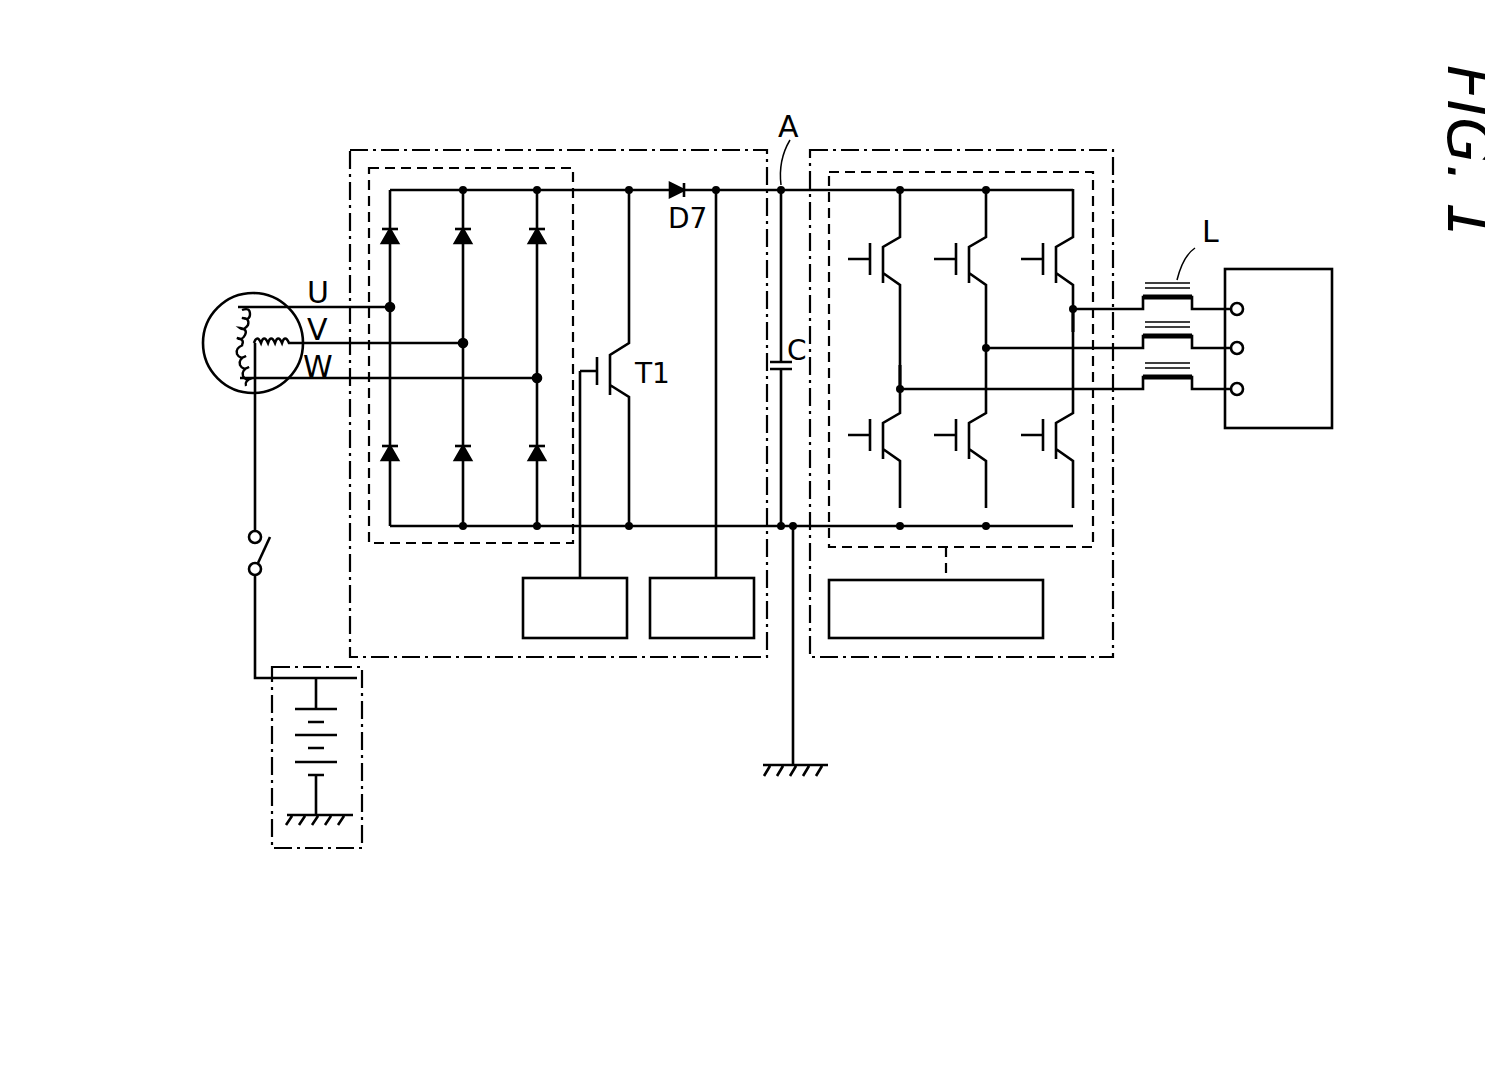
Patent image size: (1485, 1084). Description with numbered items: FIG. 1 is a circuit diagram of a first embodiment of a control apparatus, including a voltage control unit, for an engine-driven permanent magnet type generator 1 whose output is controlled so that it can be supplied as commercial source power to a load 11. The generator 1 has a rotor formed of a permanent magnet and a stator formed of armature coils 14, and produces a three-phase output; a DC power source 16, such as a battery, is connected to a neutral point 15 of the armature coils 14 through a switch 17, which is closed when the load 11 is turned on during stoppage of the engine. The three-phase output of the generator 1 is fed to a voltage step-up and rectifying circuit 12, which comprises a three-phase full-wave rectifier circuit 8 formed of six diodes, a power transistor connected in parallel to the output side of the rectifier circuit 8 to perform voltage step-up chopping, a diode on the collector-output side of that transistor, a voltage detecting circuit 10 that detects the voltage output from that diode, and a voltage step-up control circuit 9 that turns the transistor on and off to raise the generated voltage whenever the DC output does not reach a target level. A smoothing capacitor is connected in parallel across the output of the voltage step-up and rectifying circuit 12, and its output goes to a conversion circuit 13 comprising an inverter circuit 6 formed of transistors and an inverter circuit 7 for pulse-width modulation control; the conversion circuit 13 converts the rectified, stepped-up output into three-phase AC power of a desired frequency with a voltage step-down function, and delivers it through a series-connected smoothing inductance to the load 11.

The permanent magnet type generator 1 is at (228, 319).
The armature coils 14 is at (238, 320).
The neutral point 15 is at (243, 343).
The switch 17 is at (248, 562).
The DC power source 16 is at (272, 770).
The voltage step-up and rectifying circuit 12 is at (577, 150).
The three-phase full-wave rectifier circuit 8 is at (418, 168).
The voltage step-up control circuit 9 is at (565, 620).
The voltage detecting circuit 10 is at (702, 622).
The conversion circuit 13 is at (1115, 553).
The inverter circuit 6 is at (1060, 172).
The inverter circuit 7 is at (947, 622).
The load 11 is at (1316, 290).